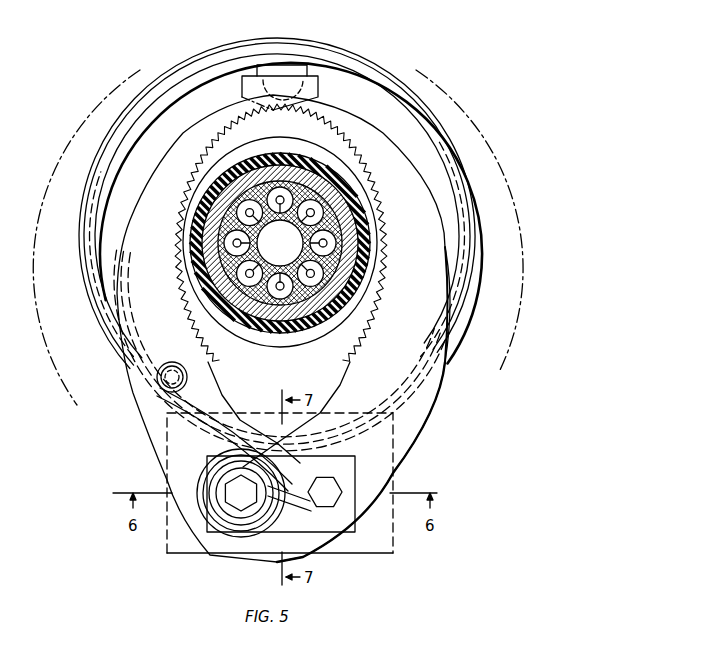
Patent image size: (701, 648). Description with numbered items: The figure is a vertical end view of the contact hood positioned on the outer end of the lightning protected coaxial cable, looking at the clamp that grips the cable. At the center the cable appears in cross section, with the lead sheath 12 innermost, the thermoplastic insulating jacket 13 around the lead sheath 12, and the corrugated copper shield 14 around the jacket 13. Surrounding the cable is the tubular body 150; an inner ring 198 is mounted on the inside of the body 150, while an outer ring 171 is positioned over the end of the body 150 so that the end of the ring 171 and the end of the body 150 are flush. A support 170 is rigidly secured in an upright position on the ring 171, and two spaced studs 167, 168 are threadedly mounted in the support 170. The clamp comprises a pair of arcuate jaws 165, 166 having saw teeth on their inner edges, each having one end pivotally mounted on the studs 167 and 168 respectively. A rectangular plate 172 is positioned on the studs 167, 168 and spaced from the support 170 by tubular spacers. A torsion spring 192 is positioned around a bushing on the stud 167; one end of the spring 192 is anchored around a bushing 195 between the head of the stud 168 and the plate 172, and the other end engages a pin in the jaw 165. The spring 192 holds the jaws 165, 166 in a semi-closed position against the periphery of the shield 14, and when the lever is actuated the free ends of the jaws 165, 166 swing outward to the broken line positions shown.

The lead sheath 12 is at (323, 313).
The thermoplastic insulating jacket 13 is at (306, 332).
The corrugated copper shield 14 is at (237, 337).
The body 150 is at (372, 67).
The jaw 165 is at (147, 438).
The jaw 166 is at (503, 372).
The stud 167 is at (232, 502).
The stud 168 is at (332, 510).
The support 170 is at (393, 548).
The ring 171 is at (200, 56).
The rectangular plate 172 is at (355, 472).
The torsion spring 192 is at (226, 420).
The bushing 195 is at (186, 385).
The ring 198 is at (227, 68).